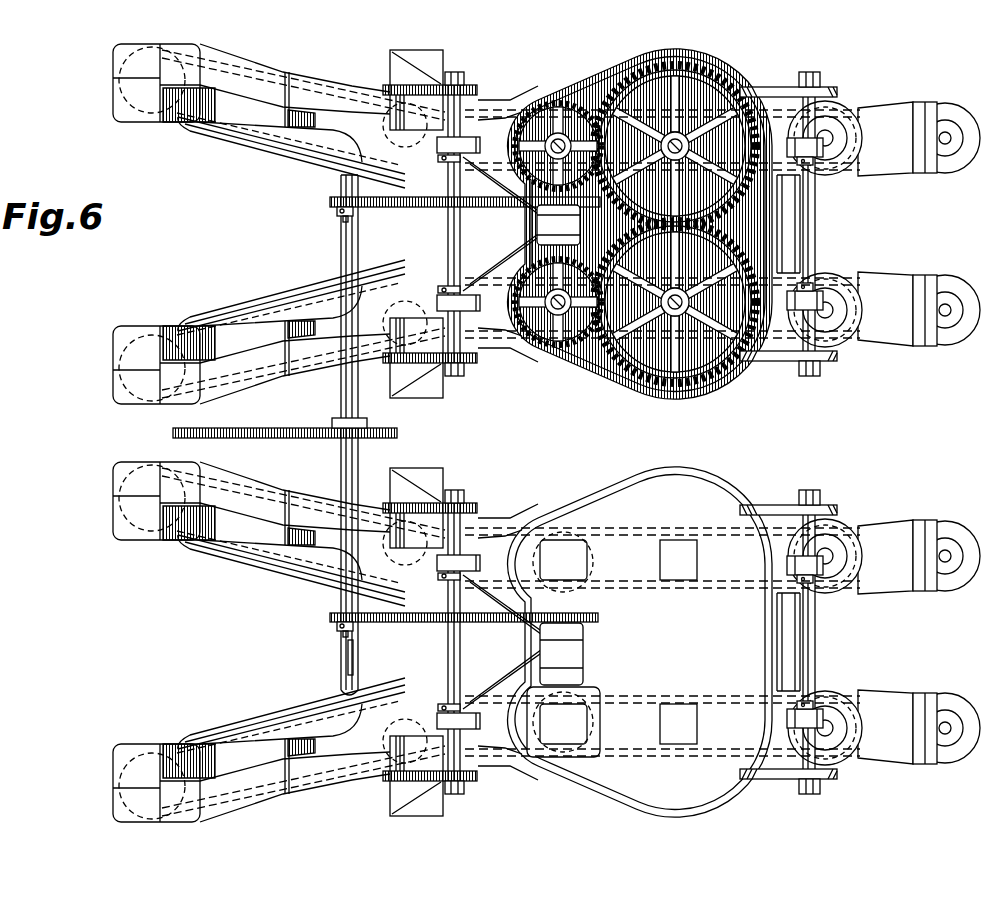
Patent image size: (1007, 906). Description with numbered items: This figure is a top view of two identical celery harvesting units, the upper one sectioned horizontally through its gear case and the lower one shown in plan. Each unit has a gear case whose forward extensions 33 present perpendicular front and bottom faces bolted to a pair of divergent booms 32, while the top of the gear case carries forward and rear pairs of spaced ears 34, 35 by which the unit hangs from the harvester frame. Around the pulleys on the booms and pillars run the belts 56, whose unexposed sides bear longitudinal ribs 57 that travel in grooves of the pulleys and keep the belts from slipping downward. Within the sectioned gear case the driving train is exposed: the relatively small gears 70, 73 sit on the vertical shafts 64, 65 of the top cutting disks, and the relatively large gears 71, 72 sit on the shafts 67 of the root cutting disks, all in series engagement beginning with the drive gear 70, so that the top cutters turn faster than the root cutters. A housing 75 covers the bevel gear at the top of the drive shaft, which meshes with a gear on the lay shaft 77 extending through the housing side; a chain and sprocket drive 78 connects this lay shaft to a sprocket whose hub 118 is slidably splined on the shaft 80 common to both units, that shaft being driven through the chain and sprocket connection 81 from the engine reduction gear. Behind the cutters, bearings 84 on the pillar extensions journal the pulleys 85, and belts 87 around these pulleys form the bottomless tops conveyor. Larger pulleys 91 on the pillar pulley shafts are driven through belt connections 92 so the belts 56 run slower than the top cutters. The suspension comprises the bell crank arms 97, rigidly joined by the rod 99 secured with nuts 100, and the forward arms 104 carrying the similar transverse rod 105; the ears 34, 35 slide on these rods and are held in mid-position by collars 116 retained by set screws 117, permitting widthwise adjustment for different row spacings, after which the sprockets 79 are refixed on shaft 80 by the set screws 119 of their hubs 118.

The boom 32 is at (247, 380).
The forward extension 33 is at (480, 100).
The forward ear 34 is at (467, 143).
The rear ear 35 is at (803, 147).
The belt 56 is at (300, 153).
The longitudinal rib 57 is at (330, 148).
The vertical shaft 64 is at (540, 320).
The vertical shaft 65 is at (513, 177).
The vertical shaft 67 is at (737, 77).
The small gear 70 is at (557, 320).
The large gear 71 is at (670, 400).
The large gear 72 is at (703, 50).
The small gear 73 is at (550, 97).
The housing 75 is at (580, 723).
The lay shaft 77 is at (543, 223).
The chain and sprocket drive 78 is at (423, 207).
The sprocket 79 is at (377, 412).
The shaft 80 is at (342, 266).
The chain and sprocket connection 81 is at (307, 427).
The bearing 84 is at (943, 127).
The pulley 85 is at (957, 120).
The belt 87 is at (870, 107).
The larger pulley 91 is at (850, 170).
The belt connection 92 is at (260, 112).
The arm 97 is at (773, 85).
The rod 99 is at (817, 220).
The nut 100 is at (813, 72).
The arm 104 is at (407, 90).
The transverse rod 105 is at (463, 215).
The collar 116 is at (465, 158).
The set screw 117 is at (445, 165).
The hub 118 is at (360, 212).
The set screw 119 is at (340, 220).